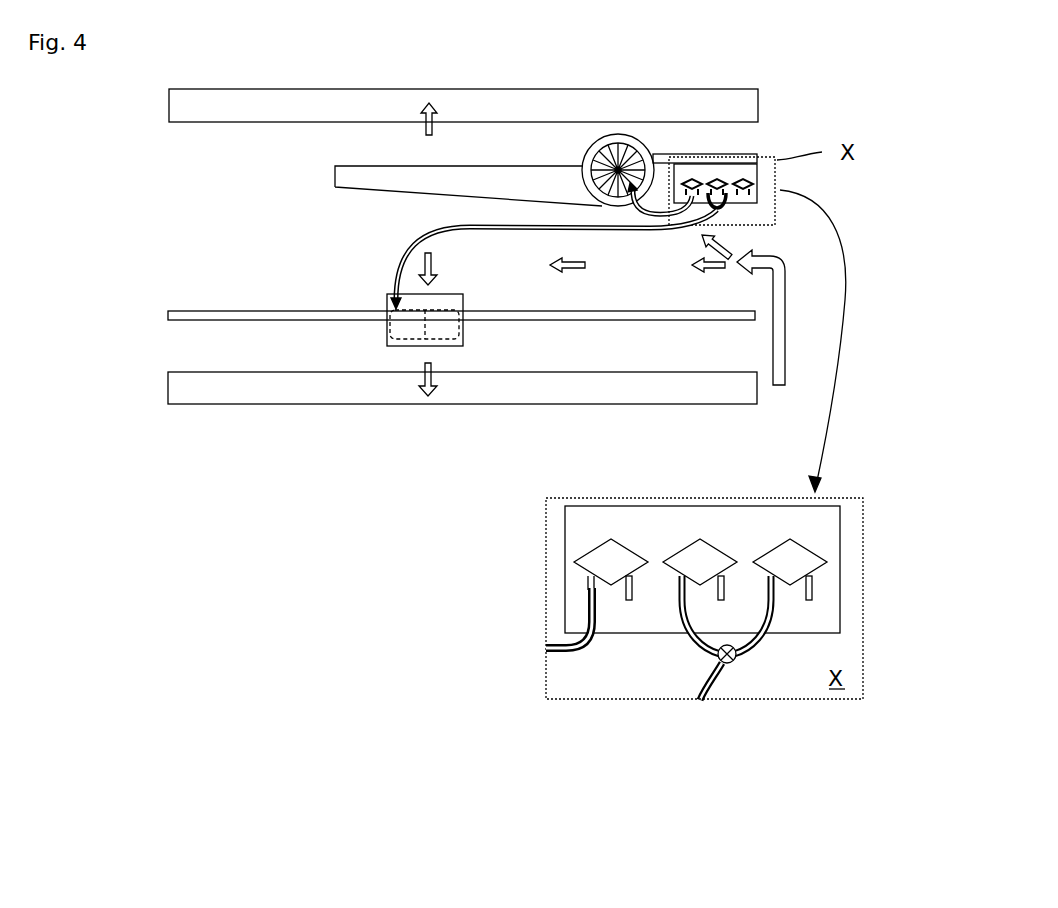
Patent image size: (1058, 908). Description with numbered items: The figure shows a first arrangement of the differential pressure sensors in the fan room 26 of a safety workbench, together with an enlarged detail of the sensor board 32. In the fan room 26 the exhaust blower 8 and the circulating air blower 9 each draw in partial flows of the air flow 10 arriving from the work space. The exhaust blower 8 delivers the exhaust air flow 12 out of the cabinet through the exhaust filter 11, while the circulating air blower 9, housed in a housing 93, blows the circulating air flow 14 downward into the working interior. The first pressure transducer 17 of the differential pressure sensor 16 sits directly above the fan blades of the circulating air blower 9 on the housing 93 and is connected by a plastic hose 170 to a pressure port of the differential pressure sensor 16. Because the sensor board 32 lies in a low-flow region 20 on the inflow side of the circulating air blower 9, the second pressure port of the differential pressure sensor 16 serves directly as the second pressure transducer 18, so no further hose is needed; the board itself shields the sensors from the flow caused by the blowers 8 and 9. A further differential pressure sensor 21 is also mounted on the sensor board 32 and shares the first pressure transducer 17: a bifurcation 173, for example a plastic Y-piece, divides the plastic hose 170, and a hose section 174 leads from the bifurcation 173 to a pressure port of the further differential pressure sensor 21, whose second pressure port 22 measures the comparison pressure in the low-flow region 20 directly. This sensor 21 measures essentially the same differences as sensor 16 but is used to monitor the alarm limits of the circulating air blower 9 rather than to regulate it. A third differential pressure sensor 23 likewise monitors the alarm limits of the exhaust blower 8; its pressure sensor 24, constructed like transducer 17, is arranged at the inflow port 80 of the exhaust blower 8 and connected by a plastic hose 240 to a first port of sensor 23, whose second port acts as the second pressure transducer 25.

The exhaust blower 8 is at (643, 170).
The circulating air blower 9 is at (398, 330).
The air flow 10 is at (776, 317).
The exhaust filter 11 is at (622, 95).
The exhaust air flow 12 is at (437, 108).
The circulating air flow 14 is at (422, 380).
The differential pressure sensor 16 is at (688, 573).
The first pressure transducer 17 is at (390, 303).
The second pressure transducer 18 is at (722, 600).
The low-flow region 20 is at (661, 676).
The further differential pressure sensor 21 is at (778, 573).
The second pressure port 22 is at (810, 598).
The third differential pressure sensor 23 is at (599, 573).
The pressure sensor 24 is at (603, 188).
The second pressure transducer 25 is at (628, 601).
The fan room 26 is at (388, 254).
The sensor board 32 is at (588, 520).
The inflow port 80 is at (607, 148).
The housing 93 is at (462, 323).
The plastic hose 170 is at (467, 232).
The bifurcation 173 is at (736, 657).
The hose section 174 is at (772, 632).
The plastic hose 240 is at (560, 645).